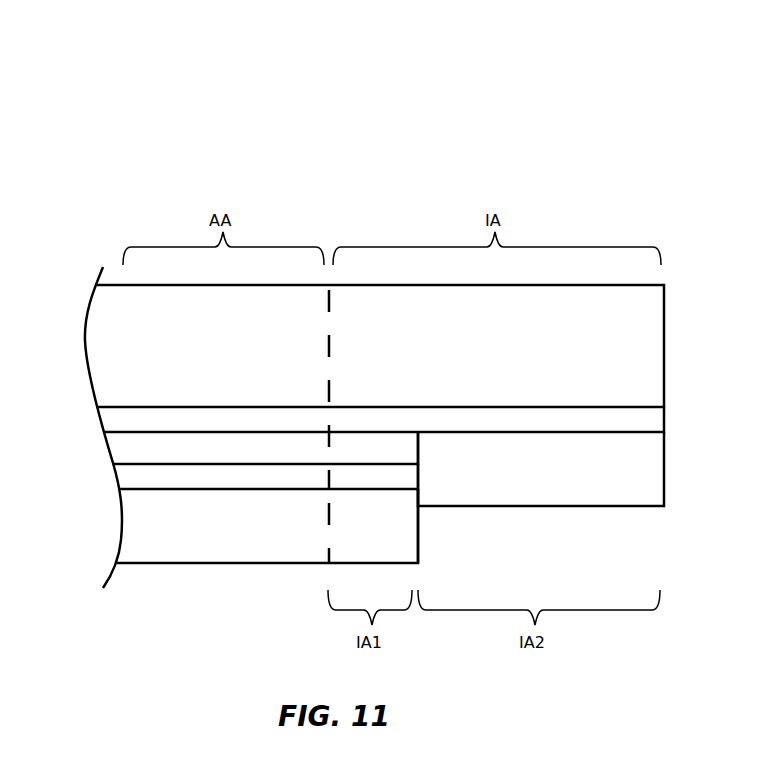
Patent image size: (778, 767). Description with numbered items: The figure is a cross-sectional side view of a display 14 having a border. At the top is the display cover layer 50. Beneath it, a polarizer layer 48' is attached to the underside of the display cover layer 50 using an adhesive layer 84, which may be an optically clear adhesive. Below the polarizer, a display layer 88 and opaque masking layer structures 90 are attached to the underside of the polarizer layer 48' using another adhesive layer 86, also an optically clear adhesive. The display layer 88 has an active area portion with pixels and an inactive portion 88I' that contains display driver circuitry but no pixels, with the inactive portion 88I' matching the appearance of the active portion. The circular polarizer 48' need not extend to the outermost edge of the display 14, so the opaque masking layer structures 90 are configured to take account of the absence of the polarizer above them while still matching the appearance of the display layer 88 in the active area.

The display 14 is at (592, 122).
The display cover layer 50 is at (97, 338).
The adhesive layer 84 is at (107, 421).
The polarizer layer 48' is at (232, 444).
The adhesive layer 86 is at (122, 477).
The display layer 88 is at (127, 526).
The inactive portion of display layer 88I' is at (405, 526).
The opaque masking layer structures 90 is at (657, 468).